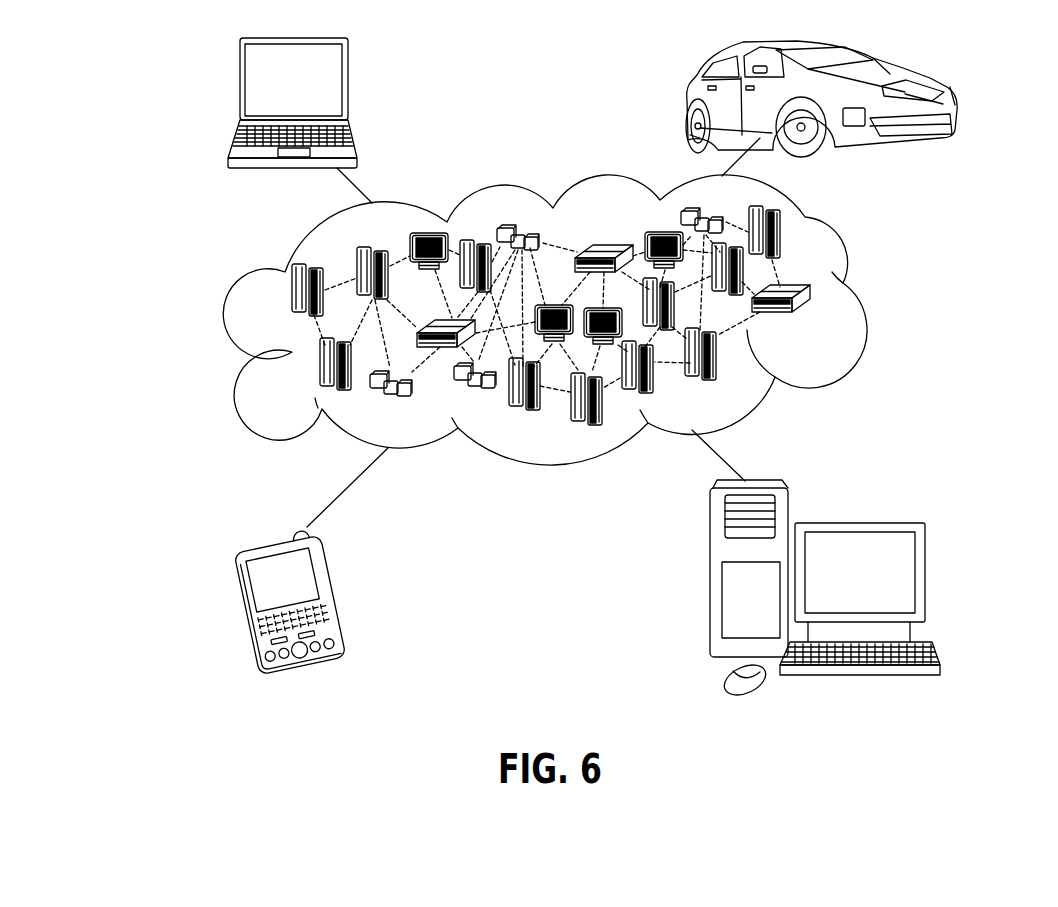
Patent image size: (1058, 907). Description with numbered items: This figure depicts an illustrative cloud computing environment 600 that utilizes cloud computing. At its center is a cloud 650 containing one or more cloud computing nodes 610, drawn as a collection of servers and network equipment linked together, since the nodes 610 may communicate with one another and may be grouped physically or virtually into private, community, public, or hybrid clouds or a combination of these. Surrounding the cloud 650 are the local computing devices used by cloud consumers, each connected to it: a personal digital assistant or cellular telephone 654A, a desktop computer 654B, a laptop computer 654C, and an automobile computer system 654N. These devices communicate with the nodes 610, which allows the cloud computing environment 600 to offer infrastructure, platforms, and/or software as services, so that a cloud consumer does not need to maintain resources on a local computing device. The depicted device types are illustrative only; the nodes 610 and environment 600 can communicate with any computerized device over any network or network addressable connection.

The cloud computing environment 600 is at (110, 58).
The cloud computing nodes 610 is at (817, 324).
The cloud 650 is at (855, 296).
The personal digital assistant or cellular telephone 654A is at (340, 597).
The desktop computer 654B is at (857, 520).
The laptop computer 654C is at (349, 86).
The automobile computer system 654N is at (688, 101).